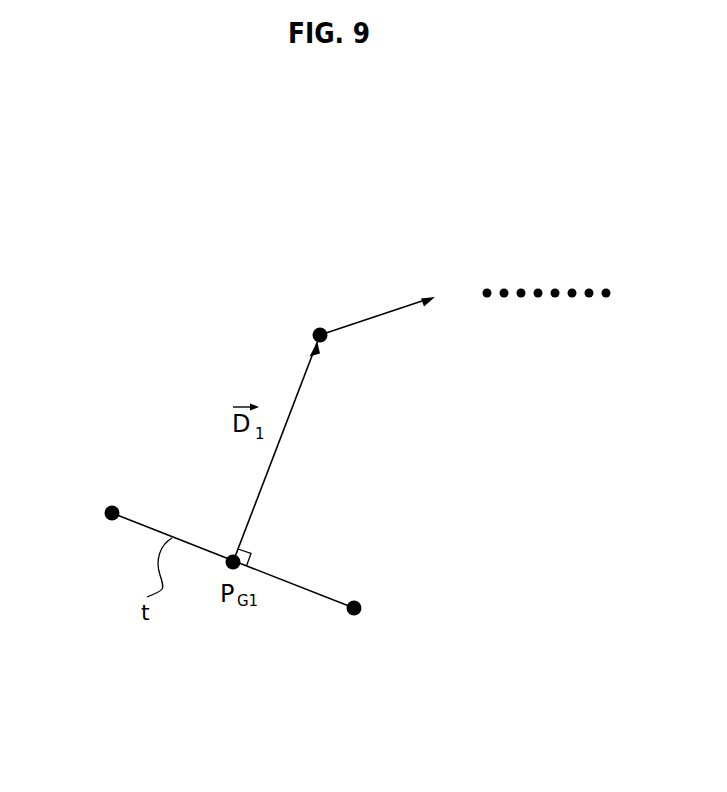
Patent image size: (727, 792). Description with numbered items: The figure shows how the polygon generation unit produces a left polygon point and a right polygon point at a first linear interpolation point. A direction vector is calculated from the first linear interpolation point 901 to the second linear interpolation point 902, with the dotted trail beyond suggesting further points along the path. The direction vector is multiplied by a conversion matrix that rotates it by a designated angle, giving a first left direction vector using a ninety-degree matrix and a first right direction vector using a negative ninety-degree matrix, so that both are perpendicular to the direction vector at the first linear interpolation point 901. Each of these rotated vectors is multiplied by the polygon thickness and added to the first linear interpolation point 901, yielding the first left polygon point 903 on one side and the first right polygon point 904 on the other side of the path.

The first linear interpolation point 901 is at (253, 548).
The second linear interpolation point 902 is at (312, 330).
The first left polygon point 903 is at (105, 520).
The first right polygon point 904 is at (353, 617).